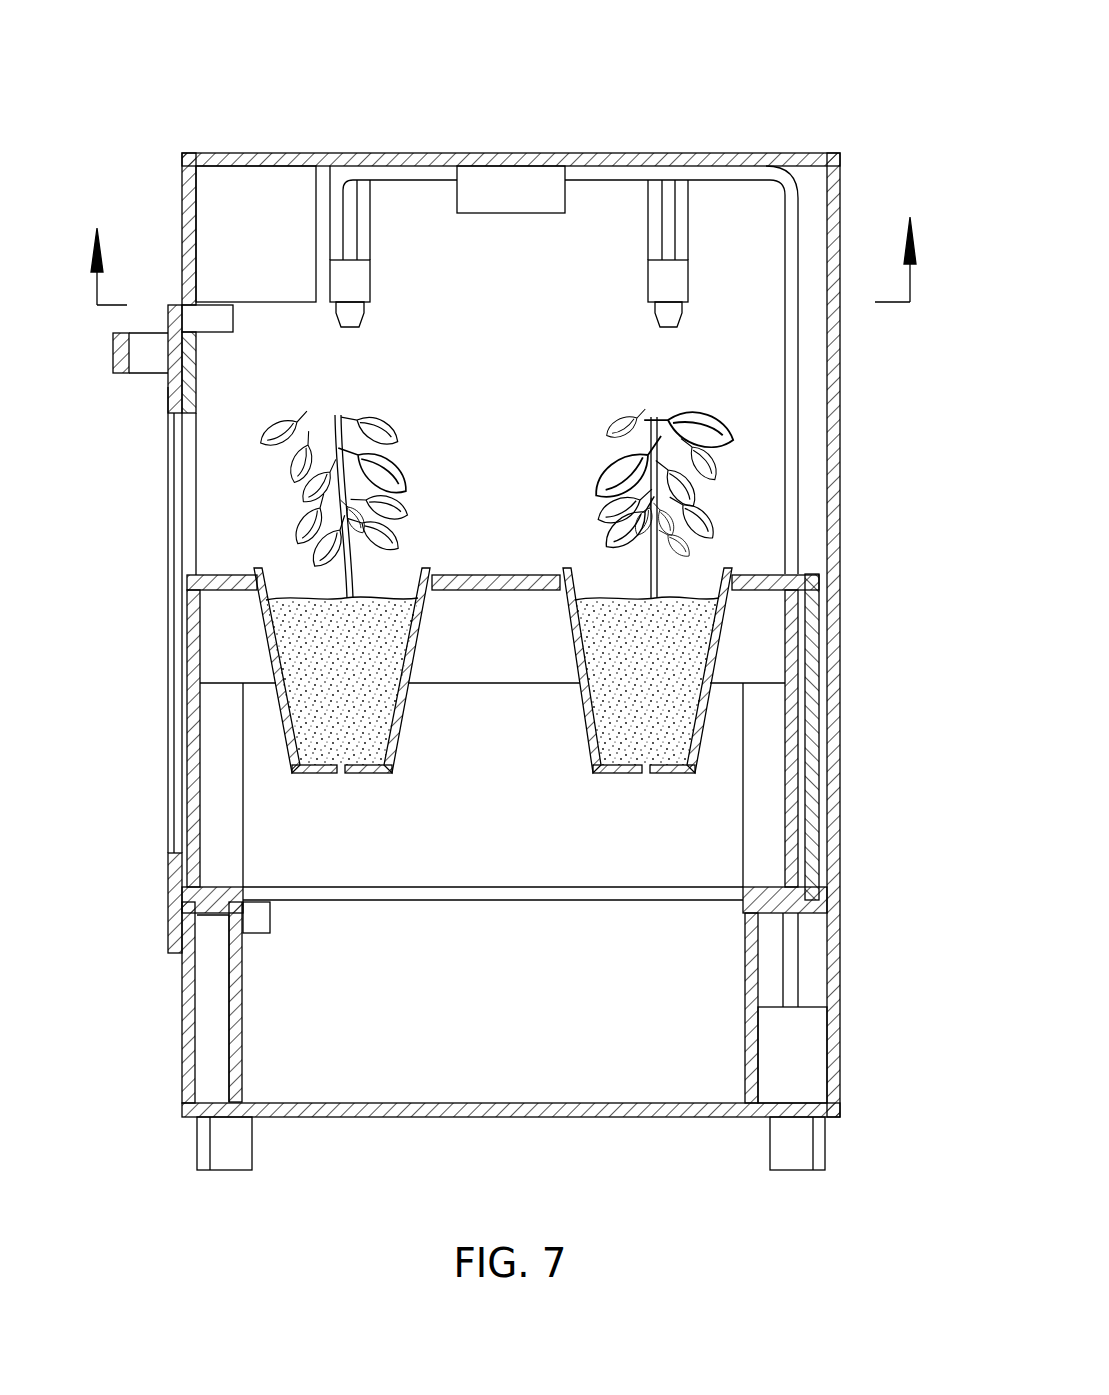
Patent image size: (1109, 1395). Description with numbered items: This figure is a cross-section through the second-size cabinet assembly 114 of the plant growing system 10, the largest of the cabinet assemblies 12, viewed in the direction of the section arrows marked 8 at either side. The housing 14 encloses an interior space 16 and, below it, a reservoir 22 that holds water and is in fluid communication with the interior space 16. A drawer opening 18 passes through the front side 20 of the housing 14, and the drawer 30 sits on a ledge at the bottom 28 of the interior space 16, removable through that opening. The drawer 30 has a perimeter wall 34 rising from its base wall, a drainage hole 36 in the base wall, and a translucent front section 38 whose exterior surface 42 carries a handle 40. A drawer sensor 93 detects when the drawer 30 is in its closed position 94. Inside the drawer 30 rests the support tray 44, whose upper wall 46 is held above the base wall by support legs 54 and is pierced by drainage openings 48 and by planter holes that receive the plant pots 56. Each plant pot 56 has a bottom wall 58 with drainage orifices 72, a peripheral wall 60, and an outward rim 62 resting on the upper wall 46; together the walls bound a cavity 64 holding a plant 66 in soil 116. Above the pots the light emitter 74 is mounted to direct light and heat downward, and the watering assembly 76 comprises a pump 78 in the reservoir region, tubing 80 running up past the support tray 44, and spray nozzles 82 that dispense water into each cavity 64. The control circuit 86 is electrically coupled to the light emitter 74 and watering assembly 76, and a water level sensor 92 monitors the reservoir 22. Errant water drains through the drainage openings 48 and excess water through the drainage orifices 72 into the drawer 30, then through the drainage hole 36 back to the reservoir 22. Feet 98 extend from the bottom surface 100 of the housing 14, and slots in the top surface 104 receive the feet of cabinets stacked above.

The plant growing system 10 is at (808, 76).
The cabinet assembly 12 is at (154, 157).
The housing 14 is at (875, 185).
The interior space 16 is at (593, 285).
The drawer opening 18 is at (192, 455).
The front side 20 is at (182, 222).
The reservoir 22 is at (604, 1048).
The bottom 28 is at (808, 913).
The drawer 30 is at (147, 888).
The perimeter wall 34 is at (812, 585).
The drainage hole 36 is at (505, 903).
The front section 38 is at (168, 922).
The handle 40 is at (113, 352).
The exterior surface 42 is at (168, 387).
The support tray 44 is at (500, 553).
The upper wall 46 is at (480, 685).
The drainage opening 48 is at (228, 583).
The support legs 54 is at (225, 803).
The plant pot 56 is at (270, 736).
The bottom wall 58 is at (358, 773).
The peripheral wall 60 is at (278, 695).
The rim 62 is at (513, 469).
The cavity 64 is at (298, 582).
The plant 66 is at (335, 415).
The drainage orifices 72 is at (333, 780).
The light emitter 74 is at (540, 185).
The watering assembly 76 is at (710, 237).
The pump 78 is at (802, 1053).
The tubing 80 is at (788, 293).
The spray nozzle 82 is at (350, 314).
The control circuit 86 is at (250, 193).
The water level sensor 92 is at (258, 918).
The drawer sensor 93 is at (215, 315).
The closed position 94 is at (130, 513).
The feet 98 is at (223, 1158).
The bottom surface 100 is at (391, 1117).
The top surface 104 is at (340, 158).
The second-size cabinet assembly 114 is at (155, 1102).
The soil 116 is at (320, 654).
The section line 8 is at (503, 247).